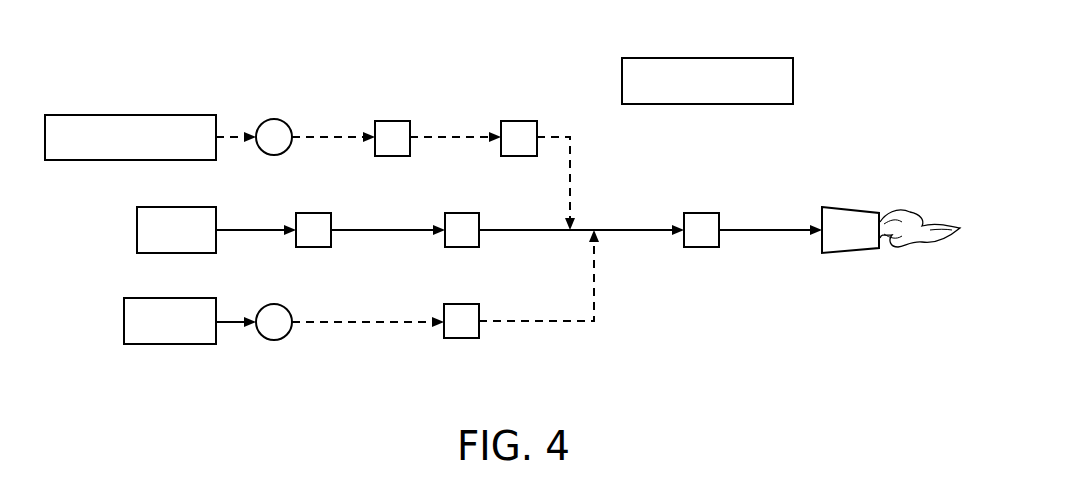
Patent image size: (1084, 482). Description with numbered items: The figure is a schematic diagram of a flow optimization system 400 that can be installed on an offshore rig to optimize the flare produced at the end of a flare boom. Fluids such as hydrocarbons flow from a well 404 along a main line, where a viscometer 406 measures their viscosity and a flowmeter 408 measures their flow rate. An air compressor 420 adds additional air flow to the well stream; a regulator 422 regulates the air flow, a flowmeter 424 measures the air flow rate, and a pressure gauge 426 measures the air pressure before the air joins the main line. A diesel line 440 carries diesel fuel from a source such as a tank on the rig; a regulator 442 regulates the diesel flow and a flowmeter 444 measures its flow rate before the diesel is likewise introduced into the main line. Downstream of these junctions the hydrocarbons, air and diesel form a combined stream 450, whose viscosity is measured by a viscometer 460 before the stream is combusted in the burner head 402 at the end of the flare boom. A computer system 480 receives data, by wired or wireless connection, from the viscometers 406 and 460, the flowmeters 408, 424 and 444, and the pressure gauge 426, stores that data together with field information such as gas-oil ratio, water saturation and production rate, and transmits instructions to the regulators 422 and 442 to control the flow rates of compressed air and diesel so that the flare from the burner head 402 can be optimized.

The optimization system 400 is at (186, 56).
The burner head 402 is at (851, 254).
The well 404 is at (137, 220).
The viscometer 406 is at (316, 213).
The flowmeter 408 is at (462, 213).
The air compressor 420 is at (130, 115).
The regulator 422 is at (272, 119).
The flowmeter 424 is at (393, 121).
The pressure gauge 426 is at (518, 121).
The diesel line 440 is at (170, 345).
The regulator 442 is at (272, 341).
The flowmeter 444 is at (462, 339).
The combined stream 450 is at (628, 226).
The viscometer 460 is at (702, 213).
The computer system 480 is at (793, 80).